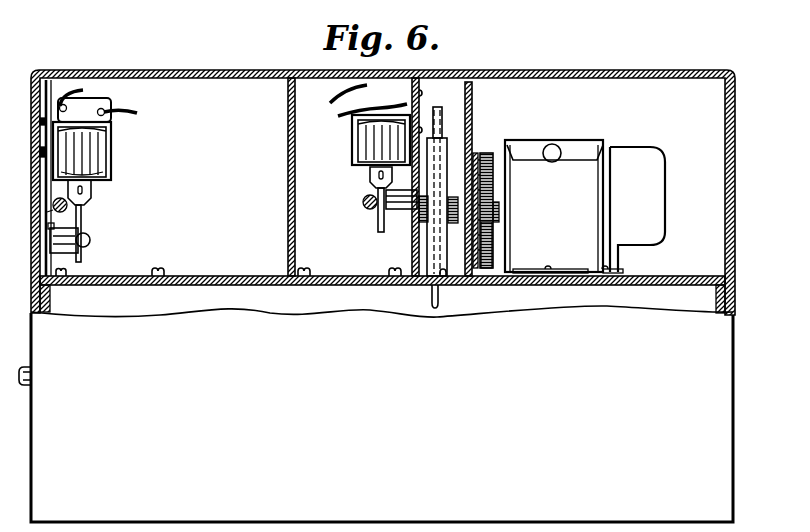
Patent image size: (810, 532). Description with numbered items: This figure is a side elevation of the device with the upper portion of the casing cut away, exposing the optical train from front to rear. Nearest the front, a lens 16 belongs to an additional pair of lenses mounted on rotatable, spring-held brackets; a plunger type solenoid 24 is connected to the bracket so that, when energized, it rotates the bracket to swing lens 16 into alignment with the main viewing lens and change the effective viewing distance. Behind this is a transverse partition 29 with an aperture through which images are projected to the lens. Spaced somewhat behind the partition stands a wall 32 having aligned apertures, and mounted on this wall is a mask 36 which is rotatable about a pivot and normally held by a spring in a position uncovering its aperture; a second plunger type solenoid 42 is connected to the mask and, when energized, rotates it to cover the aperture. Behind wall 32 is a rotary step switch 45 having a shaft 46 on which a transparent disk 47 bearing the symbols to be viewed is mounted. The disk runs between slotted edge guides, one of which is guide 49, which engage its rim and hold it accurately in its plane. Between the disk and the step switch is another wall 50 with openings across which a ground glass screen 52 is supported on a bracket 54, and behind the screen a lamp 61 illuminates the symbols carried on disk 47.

The lens 16 is at (82, 224).
The plunger type solenoid 24 is at (97, 152).
The transverse partition 29 is at (288, 208).
The wall 32 is at (422, 113).
The mask 36 is at (375, 213).
The plunger type solenoid 42 is at (367, 142).
The rotary step switch 45 is at (638, 160).
The shaft 46 is at (499, 212).
The transparent disk 47 is at (430, 293).
The slotted edge guide 49 is at (430, 243).
The wall 50 is at (472, 124).
The ground glass screen 52 is at (493, 228).
The bracket 54 is at (495, 182).
The lamp 61 is at (568, 168).